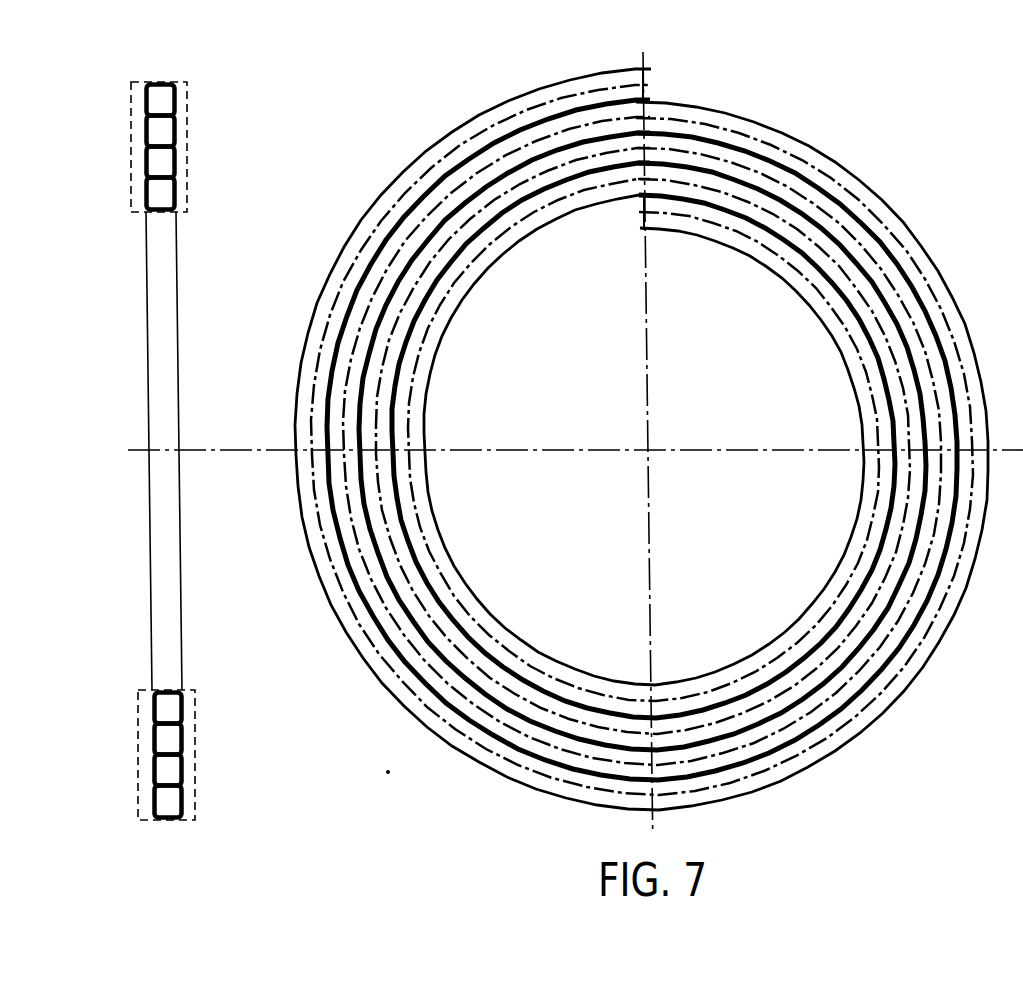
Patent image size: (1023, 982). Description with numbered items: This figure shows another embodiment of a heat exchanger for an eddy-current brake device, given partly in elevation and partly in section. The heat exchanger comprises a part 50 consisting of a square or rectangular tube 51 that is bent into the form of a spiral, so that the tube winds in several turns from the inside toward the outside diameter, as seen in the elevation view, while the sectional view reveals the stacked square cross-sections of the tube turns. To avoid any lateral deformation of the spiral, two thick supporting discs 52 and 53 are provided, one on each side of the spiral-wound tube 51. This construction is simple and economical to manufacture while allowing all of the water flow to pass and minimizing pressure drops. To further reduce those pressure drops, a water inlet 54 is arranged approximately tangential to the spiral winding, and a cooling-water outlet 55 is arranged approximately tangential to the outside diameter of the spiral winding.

The part 50 is at (887, 188).
The square or rectangular tube 51 is at (146, 101).
The thick supporting disc 52 is at (131, 176).
The thick supporting disc 53 is at (196, 748).
The water inlet 54 is at (625, 218).
The cooling-water outlet 55 is at (652, 84).